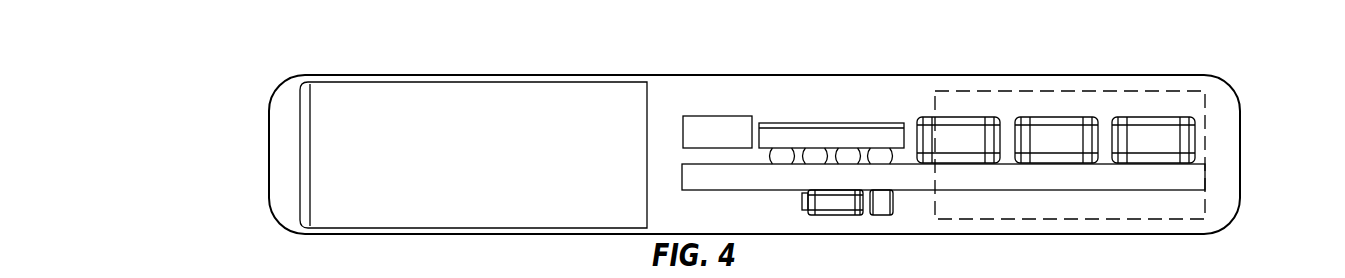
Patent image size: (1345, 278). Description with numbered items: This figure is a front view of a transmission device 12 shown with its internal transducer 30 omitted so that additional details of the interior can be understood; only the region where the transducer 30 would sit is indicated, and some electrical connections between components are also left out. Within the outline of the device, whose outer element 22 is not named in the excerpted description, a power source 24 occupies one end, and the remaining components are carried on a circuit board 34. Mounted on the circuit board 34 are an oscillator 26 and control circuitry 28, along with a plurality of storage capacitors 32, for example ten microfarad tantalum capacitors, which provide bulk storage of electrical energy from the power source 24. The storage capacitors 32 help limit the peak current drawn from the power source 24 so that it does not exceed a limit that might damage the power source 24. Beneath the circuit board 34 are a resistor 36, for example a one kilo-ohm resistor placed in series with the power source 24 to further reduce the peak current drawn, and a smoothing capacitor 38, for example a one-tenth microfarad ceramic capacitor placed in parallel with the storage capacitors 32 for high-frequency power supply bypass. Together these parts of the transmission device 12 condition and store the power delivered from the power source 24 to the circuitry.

The transmission device 12 is at (1245, 45).
The housing 22 is at (909, 74).
The power source 24 is at (455, 166).
The oscillator 26 is at (710, 116).
The control circuitry 28 is at (810, 133).
The transducer 30 is at (1167, 90).
The storage capacitors 32 is at (958, 137).
The circuit board 34 is at (750, 182).
The resistor 36 is at (837, 207).
The smoothing capacitor 38 is at (885, 205).